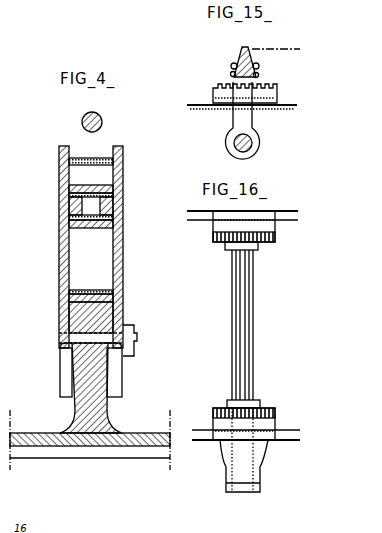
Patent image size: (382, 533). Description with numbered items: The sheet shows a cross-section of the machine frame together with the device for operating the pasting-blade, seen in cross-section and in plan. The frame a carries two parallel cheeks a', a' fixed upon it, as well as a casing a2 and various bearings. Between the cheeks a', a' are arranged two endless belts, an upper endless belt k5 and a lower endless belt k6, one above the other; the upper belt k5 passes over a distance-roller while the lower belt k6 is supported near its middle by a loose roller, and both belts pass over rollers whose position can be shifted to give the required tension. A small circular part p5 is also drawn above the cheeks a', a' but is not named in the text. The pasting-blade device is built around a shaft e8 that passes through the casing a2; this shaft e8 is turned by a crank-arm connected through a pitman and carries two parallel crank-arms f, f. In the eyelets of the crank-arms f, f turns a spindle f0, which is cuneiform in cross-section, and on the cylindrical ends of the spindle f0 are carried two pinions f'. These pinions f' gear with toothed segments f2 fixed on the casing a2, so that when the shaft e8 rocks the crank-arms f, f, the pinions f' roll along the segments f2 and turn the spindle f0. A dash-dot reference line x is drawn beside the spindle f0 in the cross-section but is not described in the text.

In FIG. 4, the frame a is at (90, 397).
In FIG. 4, the parallel cheeks a' is at (75, 247).
In FIG. 15, the casing a2 is at (201, 108).
In FIG. 16, the casing a2 is at (195, 220).
In FIG. 4, the upper endless belt k5 is at (98, 162).
In FIG. 4, the lower endless belt k6 is at (88, 280).
In FIG. 4, the pin p5 is at (102, 119).
In FIG. 15, the crank-arms f is at (243, 120).
In FIG. 16, the crank-arms f is at (223, 326).
In FIG. 15, the pinions f' is at (224, 75).
In FIG. 16, the pinions f' is at (219, 325).
In FIG. 15, the toothed segments f2 is at (277, 91).
In FIG. 16, the toothed segments f2 is at (275, 242).
In FIG. 15, the spindle f0 is at (241, 52).
In FIG. 16, the spindle f0 is at (243, 303).
In FIG. 15, the shaft e8 is at (250, 137).
In FIG. 16, the shaft e8 is at (253, 342).
In FIG. 15, the axis line x is at (280, 53).